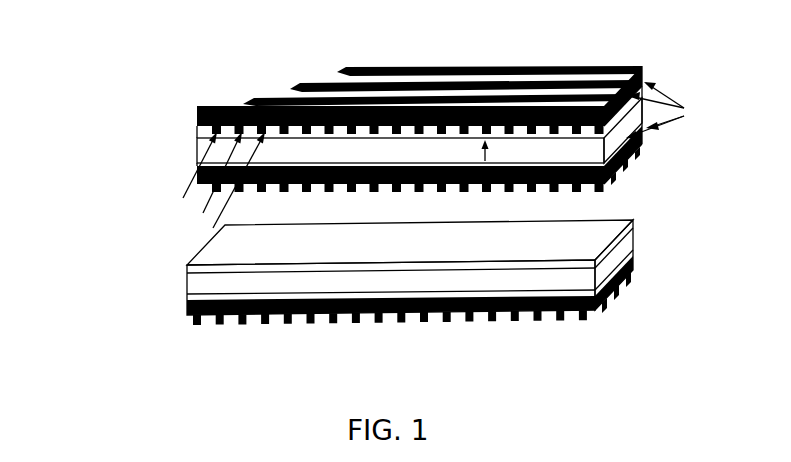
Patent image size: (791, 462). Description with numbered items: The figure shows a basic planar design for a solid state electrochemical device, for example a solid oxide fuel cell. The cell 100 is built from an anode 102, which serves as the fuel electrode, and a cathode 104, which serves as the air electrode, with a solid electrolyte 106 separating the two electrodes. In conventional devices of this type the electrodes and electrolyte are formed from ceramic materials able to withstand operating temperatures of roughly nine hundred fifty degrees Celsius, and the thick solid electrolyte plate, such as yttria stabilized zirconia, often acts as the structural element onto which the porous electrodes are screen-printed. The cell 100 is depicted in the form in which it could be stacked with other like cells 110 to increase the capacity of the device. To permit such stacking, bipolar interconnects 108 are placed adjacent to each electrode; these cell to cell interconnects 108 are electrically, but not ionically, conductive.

The cell 100 is at (116, 124).
The anode 102 is at (197, 138).
The cathode 104 is at (638, 102).
The solid electrolyte 106 is at (645, 88).
The bipolar interconnect 108 is at (198, 118).
The like cells 110 is at (662, 240).